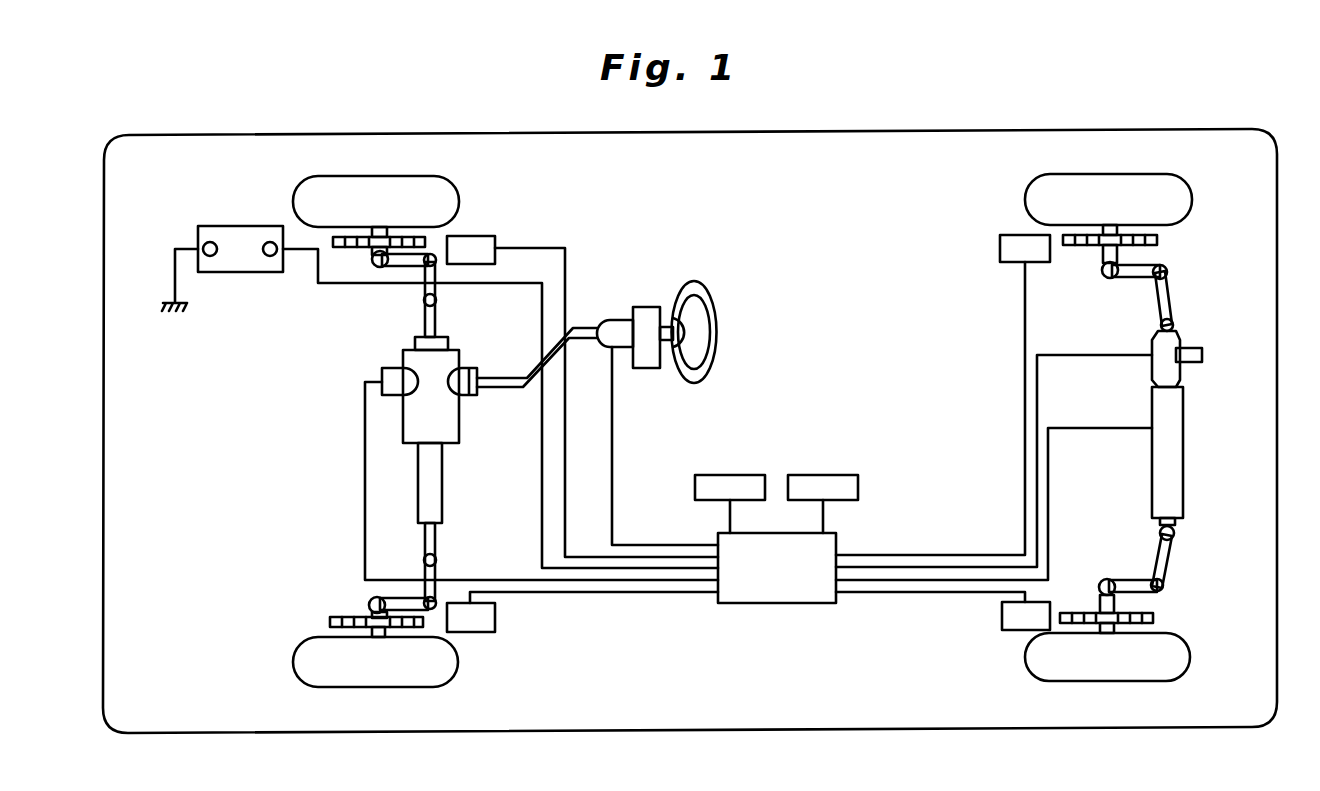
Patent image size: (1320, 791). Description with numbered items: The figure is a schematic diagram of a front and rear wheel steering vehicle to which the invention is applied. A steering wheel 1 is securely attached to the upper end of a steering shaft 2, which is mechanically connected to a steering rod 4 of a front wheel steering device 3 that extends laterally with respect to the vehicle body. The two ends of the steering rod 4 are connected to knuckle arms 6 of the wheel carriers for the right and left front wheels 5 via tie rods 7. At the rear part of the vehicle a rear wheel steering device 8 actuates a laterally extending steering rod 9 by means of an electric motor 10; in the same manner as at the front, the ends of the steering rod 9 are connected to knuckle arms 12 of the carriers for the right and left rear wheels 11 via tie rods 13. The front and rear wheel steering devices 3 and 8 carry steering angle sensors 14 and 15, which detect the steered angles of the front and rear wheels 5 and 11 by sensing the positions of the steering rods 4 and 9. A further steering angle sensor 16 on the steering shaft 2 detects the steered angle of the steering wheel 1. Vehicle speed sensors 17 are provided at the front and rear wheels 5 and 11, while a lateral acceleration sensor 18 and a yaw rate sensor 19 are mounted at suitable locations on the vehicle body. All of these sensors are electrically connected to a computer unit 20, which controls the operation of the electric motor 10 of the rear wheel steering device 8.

The steering wheel 1 is at (697, 290).
The steering shaft 2 is at (509, 392).
The front wheel steering device 3 is at (415, 345).
The steering rod 4 is at (437, 505).
The front wheels 5 is at (303, 190).
The knuckle arms 6 is at (405, 270).
The tie rods 7 is at (437, 283).
The rear wheel steering device 8 is at (1210, 413).
The steering rod 9 is at (1175, 338).
The electric motor 10 is at (1183, 462).
The rear wheels 11 is at (1180, 195).
The knuckle arms 12 is at (1135, 278).
The tie rods 13 is at (1170, 298).
The steering angle sensor 14 is at (385, 378).
The steering angle sensor 15 is at (1205, 355).
The steering angle sensor 16 is at (615, 325).
The vehicle speed sensors 17 is at (480, 240).
The lateral acceleration sensor 18 is at (748, 475).
The yaw rate sensor 19 is at (845, 475).
The computer unit 20 is at (812, 605).